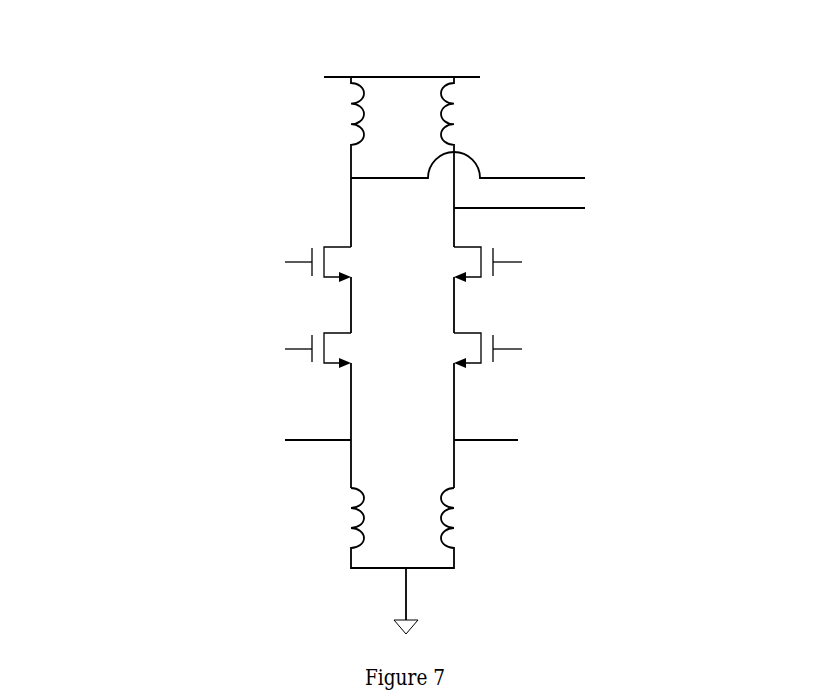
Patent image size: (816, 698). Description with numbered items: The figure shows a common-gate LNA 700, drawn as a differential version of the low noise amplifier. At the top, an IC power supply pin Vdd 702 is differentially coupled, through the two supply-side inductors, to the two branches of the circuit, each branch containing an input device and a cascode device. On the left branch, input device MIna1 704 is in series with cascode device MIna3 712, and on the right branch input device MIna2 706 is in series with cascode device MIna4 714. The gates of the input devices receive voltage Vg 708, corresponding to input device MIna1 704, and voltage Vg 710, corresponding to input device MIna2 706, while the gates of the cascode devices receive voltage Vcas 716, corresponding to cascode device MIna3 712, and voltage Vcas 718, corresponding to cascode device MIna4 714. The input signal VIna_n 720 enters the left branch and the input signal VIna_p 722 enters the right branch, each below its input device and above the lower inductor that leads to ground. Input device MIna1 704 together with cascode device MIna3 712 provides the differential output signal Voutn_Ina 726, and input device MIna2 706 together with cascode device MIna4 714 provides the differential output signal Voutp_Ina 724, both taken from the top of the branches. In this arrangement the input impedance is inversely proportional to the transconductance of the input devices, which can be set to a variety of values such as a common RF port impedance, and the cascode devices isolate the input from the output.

The common-gate LNA 700 is at (123, 217).
The IC power supply pin Vdd 702 is at (402, 36).
The input device MIna1 704 is at (272, 320).
The input device MIna2 706 is at (535, 320).
The voltage Vg 708 is at (251, 348).
The voltage Vg 710 is at (558, 349).
The cascode device MIna3 712 is at (274, 232).
The cascode device MIna4 714 is at (454, 230).
The voltage Vcas 716 is at (231, 259).
The voltage Vcas 718 is at (578, 259).
The input signal VIna_n 720 is at (216, 437).
The input signal VIna_p 722 is at (595, 440).
The differential output signal Voutp_Ina 724 is at (684, 182).
The differential output signal Voutn_Ina 726 is at (682, 220).